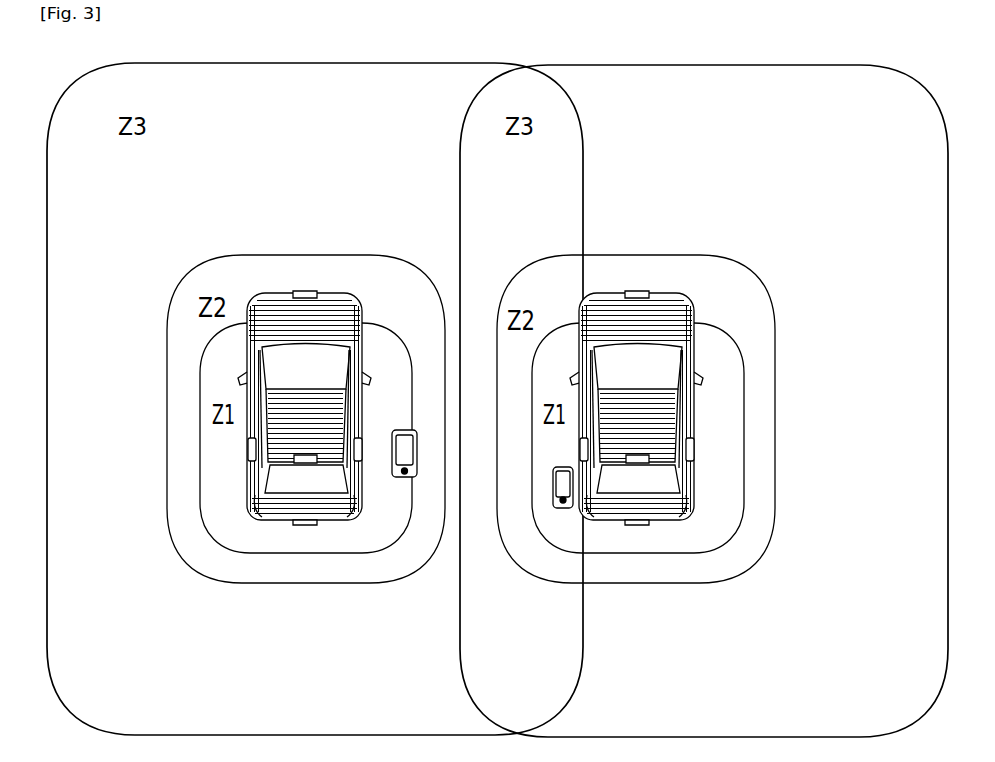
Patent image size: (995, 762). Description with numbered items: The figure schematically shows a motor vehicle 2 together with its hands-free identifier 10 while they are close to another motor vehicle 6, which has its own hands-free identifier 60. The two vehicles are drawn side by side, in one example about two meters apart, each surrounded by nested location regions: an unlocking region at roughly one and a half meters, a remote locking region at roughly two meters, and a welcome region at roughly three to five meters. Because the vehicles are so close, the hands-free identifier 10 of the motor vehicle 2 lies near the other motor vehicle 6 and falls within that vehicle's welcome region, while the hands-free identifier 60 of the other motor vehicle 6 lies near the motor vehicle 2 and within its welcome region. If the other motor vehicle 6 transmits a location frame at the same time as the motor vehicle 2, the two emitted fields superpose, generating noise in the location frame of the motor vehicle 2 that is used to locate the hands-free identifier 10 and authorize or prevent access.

The motor vehicle 2 is at (301, 297).
The other motor vehicle 6 is at (657, 292).
The hands-free identifier 10 is at (562, 508).
The hands-free identifier 60 is at (405, 478).